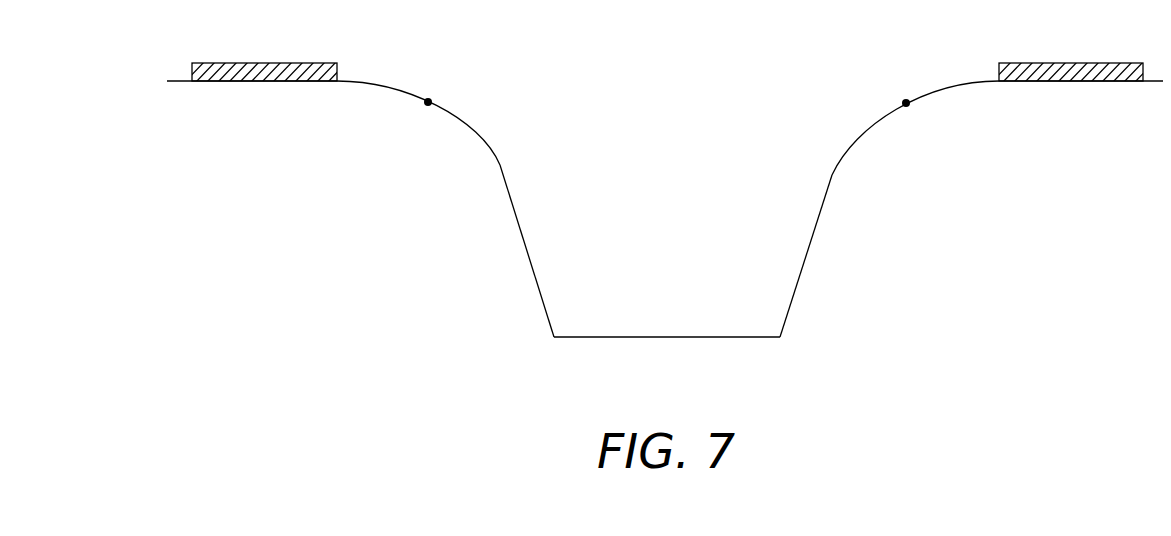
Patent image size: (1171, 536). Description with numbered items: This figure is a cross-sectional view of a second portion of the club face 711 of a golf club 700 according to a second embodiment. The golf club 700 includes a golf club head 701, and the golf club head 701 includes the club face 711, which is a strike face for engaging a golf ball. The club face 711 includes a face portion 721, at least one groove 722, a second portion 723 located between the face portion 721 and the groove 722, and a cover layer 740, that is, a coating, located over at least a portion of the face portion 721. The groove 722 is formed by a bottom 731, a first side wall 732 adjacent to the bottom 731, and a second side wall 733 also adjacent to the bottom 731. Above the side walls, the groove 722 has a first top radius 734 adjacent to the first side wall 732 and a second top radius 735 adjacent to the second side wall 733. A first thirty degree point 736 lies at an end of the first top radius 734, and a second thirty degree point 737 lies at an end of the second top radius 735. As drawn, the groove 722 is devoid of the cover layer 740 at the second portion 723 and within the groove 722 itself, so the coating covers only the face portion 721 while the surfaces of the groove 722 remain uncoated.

The golf club 700 is at (1023, 395).
The golf club head 701 is at (1089, 93).
The club face 711 is at (226, 85).
The face portion 721 is at (287, 93).
The groove 722 is at (660, 122).
The second portion 723 is at (949, 108).
The bottom 731 is at (669, 337).
The first side wall 732 is at (524, 238).
The second side wall 733 is at (810, 236).
The first top radius 734 is at (489, 147).
The second top radius 735 is at (851, 141).
The first thirty degree point 736 is at (430, 100).
The second thirty degree point 737 is at (905, 101).
The cover layer 740 is at (258, 63).